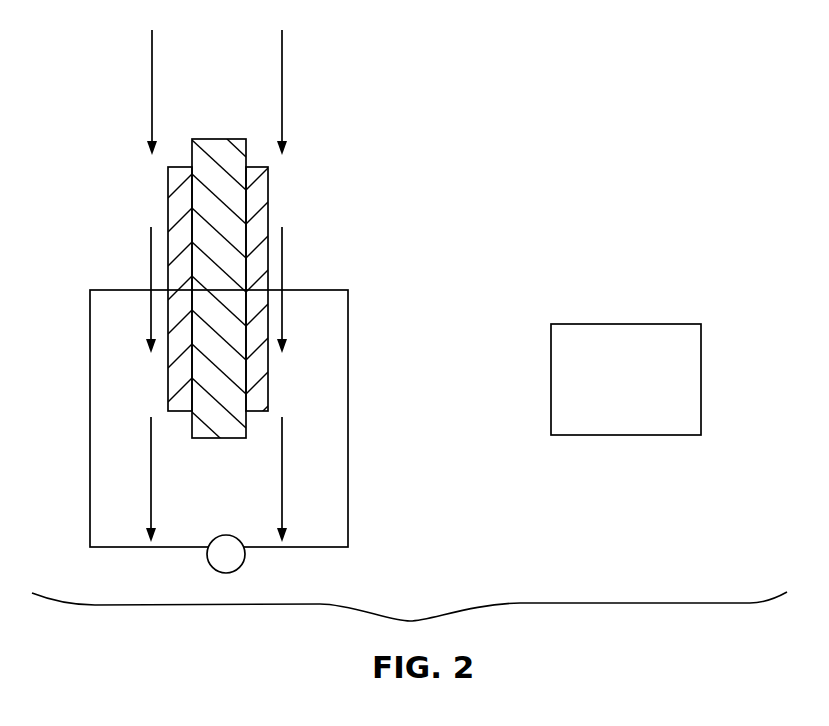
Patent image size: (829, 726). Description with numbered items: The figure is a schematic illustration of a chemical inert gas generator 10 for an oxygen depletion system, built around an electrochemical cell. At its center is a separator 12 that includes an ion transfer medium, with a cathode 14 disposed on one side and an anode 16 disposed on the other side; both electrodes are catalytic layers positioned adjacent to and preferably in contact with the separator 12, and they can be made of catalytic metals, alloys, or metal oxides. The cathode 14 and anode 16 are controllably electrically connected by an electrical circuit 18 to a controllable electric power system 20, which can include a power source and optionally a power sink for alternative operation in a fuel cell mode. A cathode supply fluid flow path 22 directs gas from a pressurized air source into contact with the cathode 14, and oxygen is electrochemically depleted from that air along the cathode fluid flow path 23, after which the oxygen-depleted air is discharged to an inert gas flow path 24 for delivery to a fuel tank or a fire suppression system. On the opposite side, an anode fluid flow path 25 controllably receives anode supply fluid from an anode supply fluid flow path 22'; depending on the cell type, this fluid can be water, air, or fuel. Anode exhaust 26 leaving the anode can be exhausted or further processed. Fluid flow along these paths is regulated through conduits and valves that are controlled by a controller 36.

The chemical inert gas generator 10 is at (434, 61).
The separator 12 is at (217, 139).
The cathode 14 is at (167, 192).
The anode 16 is at (268, 187).
The electrical circuit 18 is at (310, 290).
The electric power system 20 is at (238, 568).
The cathode supply fluid flow path 22 is at (116, 92).
The anode supply fluid flow path 22' is at (324, 92).
The cathode fluid flow path 23 is at (150, 262).
The inert gas flow path 24 is at (150, 483).
The anode fluid flow path 25 is at (283, 302).
The anode exhaust 26 is at (282, 503).
The controller 36 is at (701, 378).